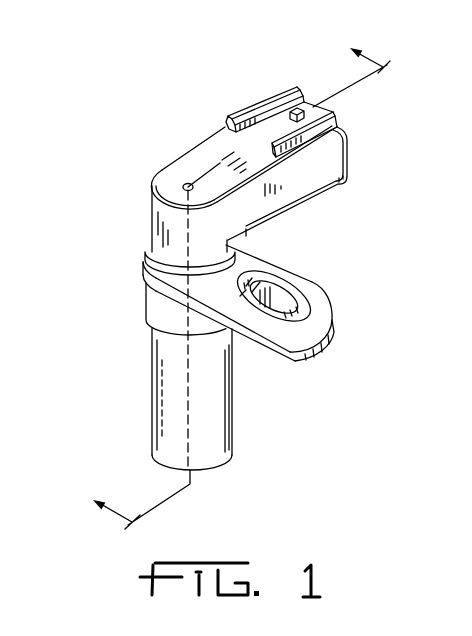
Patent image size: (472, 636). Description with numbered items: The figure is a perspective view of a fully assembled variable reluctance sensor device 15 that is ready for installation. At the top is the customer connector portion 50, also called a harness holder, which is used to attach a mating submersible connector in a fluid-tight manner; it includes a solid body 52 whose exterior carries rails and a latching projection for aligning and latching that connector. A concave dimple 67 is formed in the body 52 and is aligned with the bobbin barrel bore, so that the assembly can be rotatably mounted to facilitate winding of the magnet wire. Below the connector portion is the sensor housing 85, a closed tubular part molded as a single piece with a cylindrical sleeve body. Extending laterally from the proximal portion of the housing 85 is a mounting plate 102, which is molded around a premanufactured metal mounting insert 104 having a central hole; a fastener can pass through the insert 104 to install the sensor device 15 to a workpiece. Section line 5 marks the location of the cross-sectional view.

The variable reluctance sensor device 15 is at (225, 252).
The customer connector portion 50 is at (222, 112).
The body 52 is at (324, 164).
The concave dimple 67 is at (184, 184).
The mounting plate 102 is at (268, 303).
The mounting insert 104 is at (334, 330).
The sensor housing 85 is at (141, 366).
The section line 5- 5 is at (231, 280).